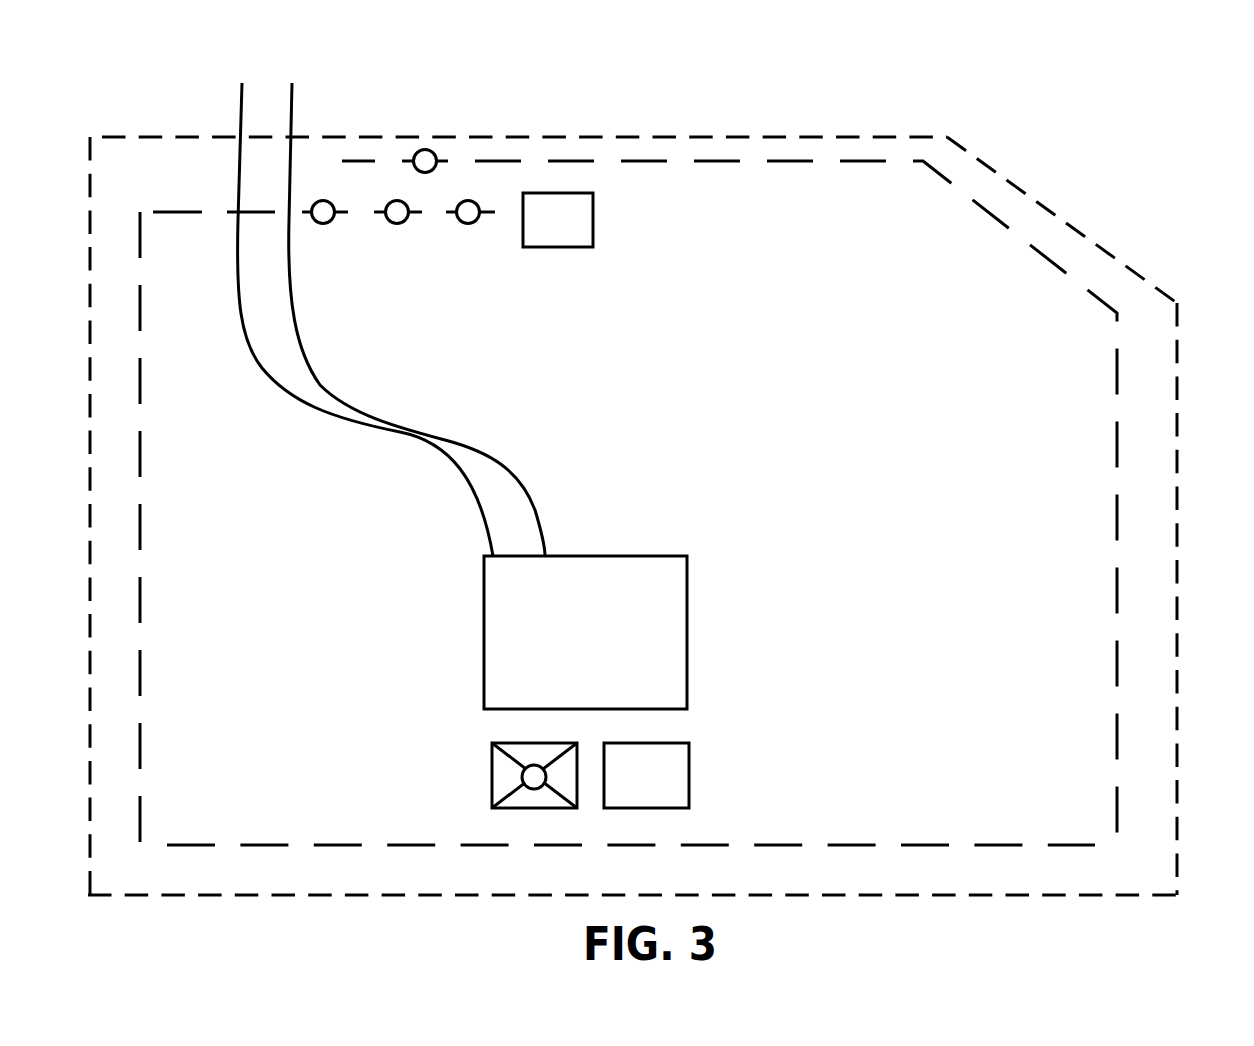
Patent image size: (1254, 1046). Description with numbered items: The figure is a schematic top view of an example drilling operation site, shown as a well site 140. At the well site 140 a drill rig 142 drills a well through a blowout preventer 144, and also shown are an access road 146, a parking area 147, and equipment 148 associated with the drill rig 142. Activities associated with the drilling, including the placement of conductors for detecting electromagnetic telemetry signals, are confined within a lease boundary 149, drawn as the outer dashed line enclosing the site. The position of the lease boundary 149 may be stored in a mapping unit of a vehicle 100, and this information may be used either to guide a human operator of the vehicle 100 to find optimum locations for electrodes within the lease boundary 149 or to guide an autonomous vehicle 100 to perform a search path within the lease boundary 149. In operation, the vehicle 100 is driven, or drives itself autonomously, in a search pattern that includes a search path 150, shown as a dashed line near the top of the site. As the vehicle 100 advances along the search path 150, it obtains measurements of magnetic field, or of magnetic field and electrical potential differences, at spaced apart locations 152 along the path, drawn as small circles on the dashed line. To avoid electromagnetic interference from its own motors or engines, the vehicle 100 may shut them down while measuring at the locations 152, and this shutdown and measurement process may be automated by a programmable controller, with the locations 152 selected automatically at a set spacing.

The well site 140 is at (1121, 103).
The lease boundary 149 is at (726, 137).
The search path 150 is at (493, 160).
The spaced apart locations 152 is at (465, 224).
The vehicle 100 is at (557, 247).
The access road 146 is at (508, 462).
The parking area 147 is at (604, 603).
The drill rig 142 is at (492, 790).
The blowout preventer 144 is at (533, 766).
The equipment 148 is at (689, 772).